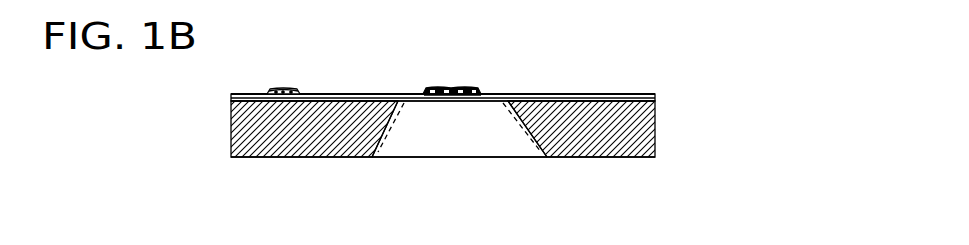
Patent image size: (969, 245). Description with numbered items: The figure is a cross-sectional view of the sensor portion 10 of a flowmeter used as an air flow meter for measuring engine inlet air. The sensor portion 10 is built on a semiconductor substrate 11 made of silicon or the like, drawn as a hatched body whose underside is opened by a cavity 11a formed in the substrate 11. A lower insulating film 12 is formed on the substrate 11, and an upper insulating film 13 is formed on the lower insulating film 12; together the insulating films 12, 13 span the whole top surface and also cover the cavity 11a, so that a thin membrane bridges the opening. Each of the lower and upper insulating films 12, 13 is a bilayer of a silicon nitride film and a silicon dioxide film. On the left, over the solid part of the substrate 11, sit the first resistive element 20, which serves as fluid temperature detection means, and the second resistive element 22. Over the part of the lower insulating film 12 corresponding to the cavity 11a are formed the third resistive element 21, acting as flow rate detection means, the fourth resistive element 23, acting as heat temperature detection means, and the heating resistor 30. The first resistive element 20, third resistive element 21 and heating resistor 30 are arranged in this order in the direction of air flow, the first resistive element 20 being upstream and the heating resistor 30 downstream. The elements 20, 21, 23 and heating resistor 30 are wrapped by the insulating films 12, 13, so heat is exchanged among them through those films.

The sensor portion 10 is at (252, 160).
The semiconductor substrate 11 is at (303, 155).
The cavity 11a is at (497, 140).
The lower insulating film 12 is at (652, 103).
The upper insulating film 13 is at (607, 93).
The first resistive element 20 is at (268, 90).
The third resistive element 21 is at (423, 87).
The second resistive element 22 is at (293, 90).
The fourth resistive element 23 is at (458, 87).
The heating resistor 30 is at (480, 90).